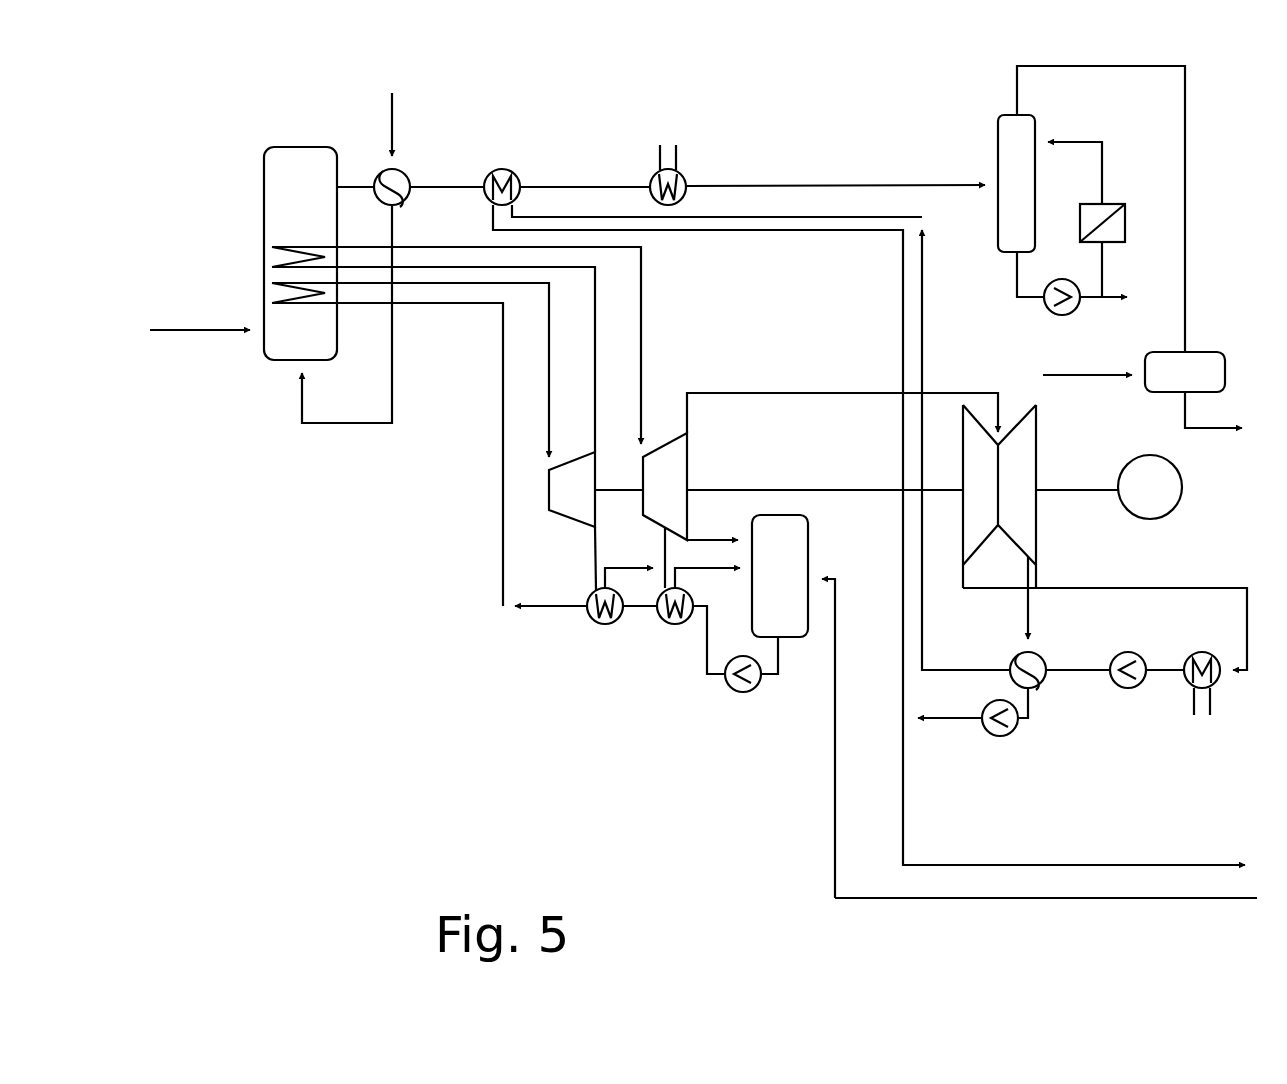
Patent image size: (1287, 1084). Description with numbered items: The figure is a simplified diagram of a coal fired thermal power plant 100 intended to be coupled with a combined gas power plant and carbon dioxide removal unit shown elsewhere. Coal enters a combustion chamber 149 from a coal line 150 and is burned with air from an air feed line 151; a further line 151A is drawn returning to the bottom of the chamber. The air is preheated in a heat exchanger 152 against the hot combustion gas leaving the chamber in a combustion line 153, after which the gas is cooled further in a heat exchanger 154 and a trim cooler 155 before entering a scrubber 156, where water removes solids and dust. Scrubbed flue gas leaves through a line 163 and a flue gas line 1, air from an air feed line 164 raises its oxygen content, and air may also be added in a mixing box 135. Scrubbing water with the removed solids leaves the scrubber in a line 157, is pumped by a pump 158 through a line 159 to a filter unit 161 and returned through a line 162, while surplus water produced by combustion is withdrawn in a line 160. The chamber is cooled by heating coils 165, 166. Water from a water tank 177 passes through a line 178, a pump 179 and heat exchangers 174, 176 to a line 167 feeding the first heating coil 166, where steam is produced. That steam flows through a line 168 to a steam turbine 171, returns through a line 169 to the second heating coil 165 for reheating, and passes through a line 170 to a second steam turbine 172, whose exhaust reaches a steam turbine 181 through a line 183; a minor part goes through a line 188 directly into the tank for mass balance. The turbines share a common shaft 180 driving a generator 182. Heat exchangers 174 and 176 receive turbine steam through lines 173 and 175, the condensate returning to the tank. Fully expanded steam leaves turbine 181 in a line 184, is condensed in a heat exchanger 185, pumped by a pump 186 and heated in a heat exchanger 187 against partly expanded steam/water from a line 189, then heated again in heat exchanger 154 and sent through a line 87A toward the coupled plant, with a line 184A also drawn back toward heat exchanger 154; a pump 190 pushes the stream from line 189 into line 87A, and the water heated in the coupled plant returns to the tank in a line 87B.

The power plant system 100 is at (410, 703).
The flue gas line 1 is at (1240, 432).
The mixing box 135 is at (1185, 372).
The combustion chamber 149 is at (300, 253).
The coal line 150 is at (200, 317).
The air feed line 151 is at (400, 148).
The solvent return line 151A is at (373, 423).
The heat exchanger 152 is at (403, 202).
The combustion line 153 is at (353, 186).
The heat exchanger 154 is at (516, 175).
The trim cooler 155 is at (683, 172).
The scrubber 156 is at (998, 153).
The line 157 is at (1017, 287).
The pump 158 is at (1062, 317).
The line 159 is at (1102, 270).
The line 160 is at (1113, 299).
The filter unit 161 is at (1125, 220).
The line 162 is at (1122, 110).
The overhead gas line 163 is at (1017, 86).
The air feed line 164 is at (1125, 384).
The heating coil 165 is at (300, 245).
The heating coil 166 is at (300, 292).
The line 167 is at (503, 568).
The line 168 is at (548, 410).
The line 169 is at (596, 387).
The line 170 is at (641, 290).
The steam turbine 171 is at (574, 521).
The second steam turbine 172 is at (668, 510).
The line 173 is at (590, 554).
The heat exchanger 174 is at (605, 625).
The line 175 is at (660, 546).
The heat exchanger 176 is at (683, 625).
The water tank 177 is at (780, 576).
The line 178 is at (783, 665).
The pump 179 is at (746, 693).
The common shaft 180 is at (862, 490).
The steam turbine 181 is at (999, 496).
The generator 182 is at (1150, 487).
The line 183 is at (880, 393).
The line 184 is at (1210, 545).
The recycle line 184A is at (925, 365).
The heat exchanger 185 is at (1190, 655).
The pump 186 is at (1138, 688).
The heat exchanger 187 is at (1040, 652).
The line 188 is at (717, 538).
The line 189 is at (1018, 622).
The pump 190 is at (1015, 730).
The line 87A is at (1125, 862).
The line 87B is at (835, 880).